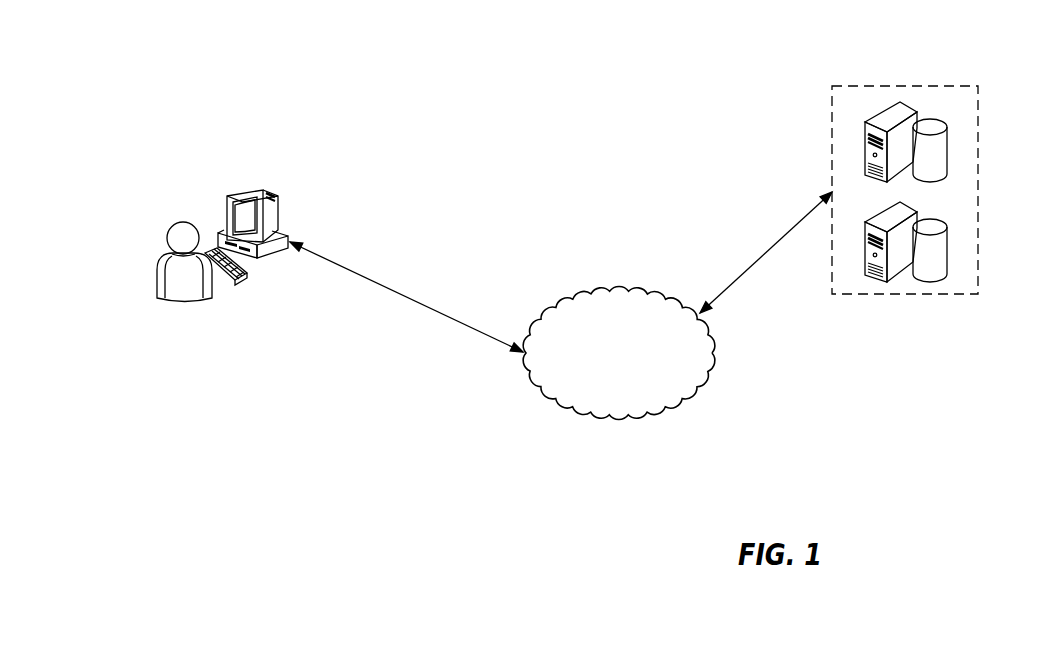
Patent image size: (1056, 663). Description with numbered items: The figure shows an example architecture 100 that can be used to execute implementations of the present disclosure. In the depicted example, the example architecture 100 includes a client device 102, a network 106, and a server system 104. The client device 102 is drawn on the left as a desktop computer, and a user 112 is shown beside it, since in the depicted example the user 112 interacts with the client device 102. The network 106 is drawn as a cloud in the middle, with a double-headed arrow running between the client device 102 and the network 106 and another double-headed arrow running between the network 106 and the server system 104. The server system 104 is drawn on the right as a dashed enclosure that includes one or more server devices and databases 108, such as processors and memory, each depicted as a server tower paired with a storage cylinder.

The example architecture 100 is at (488, 78).
The client device 102 is at (226, 200).
The server system 104 is at (978, 192).
The network 106 is at (626, 289).
The server devices and databases 108 is at (863, 139).
The user 112 is at (186, 302).